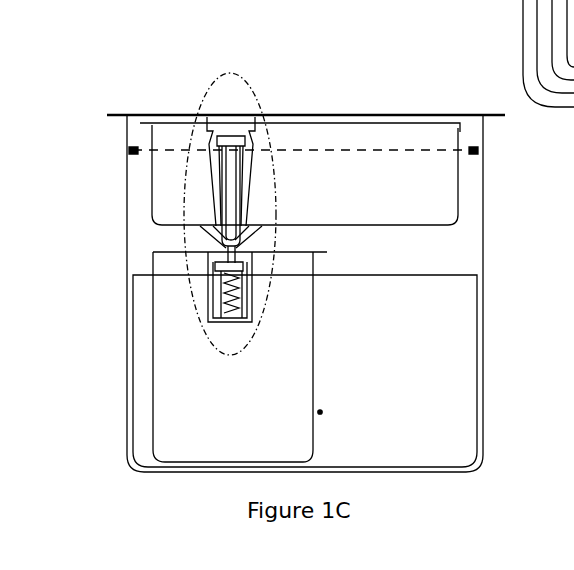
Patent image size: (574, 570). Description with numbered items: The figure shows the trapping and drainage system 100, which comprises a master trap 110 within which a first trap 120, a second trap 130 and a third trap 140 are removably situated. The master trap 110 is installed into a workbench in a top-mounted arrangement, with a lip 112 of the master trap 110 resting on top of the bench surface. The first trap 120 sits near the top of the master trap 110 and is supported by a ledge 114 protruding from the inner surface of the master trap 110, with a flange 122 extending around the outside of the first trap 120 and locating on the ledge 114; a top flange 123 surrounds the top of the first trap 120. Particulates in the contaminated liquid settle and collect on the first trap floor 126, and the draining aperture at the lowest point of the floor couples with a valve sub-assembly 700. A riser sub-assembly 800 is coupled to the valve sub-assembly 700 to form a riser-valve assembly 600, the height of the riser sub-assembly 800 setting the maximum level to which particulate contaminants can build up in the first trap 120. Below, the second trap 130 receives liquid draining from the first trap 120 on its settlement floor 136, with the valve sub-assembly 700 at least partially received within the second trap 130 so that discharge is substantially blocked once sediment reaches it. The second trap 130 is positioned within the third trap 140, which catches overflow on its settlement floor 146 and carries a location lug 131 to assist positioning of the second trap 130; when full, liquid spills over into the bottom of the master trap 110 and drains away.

The trapping and drainage system 100 is at (384, 82).
The master trap 110 is at (486, 254).
The lip 112 is at (116, 124).
The ledge 114 is at (126, 156).
The first trap 120 is at (464, 188).
The flange 122 is at (142, 157).
The top flange 123 is at (168, 121).
The first trap floor 126 is at (385, 213).
The second trap 130 is at (320, 378).
The location lug 131 is at (330, 412).
The settlement floor 136 is at (262, 452).
The third trap 140 is at (481, 352).
The settlement floor 146 is at (431, 452).
The riser-valve assembly 600 is at (207, 89).
The valve sub-assembly 700 is at (258, 311).
The riser sub-assembly 800 is at (250, 178).